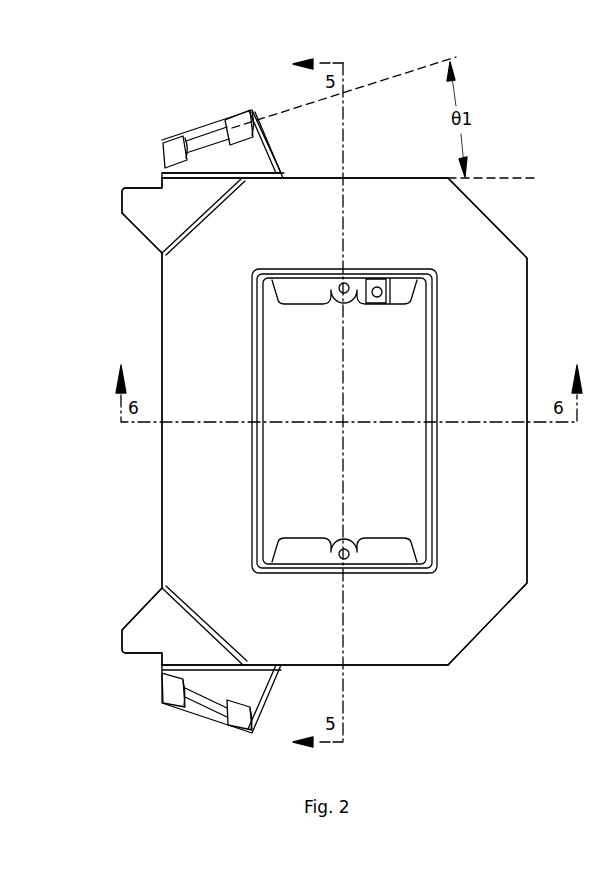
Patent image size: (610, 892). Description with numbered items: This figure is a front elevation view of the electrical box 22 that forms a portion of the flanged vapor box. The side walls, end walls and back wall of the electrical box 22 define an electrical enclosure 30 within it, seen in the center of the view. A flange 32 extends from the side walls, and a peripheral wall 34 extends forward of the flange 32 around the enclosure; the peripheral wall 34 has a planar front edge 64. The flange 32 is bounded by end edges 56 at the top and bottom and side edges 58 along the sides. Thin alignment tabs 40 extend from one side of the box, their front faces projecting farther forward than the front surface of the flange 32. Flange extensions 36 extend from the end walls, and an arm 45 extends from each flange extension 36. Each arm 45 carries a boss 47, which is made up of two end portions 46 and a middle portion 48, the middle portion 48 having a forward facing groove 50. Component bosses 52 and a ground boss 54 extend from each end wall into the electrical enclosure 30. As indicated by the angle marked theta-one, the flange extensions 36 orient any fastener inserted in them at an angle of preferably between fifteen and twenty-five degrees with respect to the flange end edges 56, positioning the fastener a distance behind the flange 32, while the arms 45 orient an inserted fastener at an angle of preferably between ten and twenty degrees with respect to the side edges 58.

The electrical box 22 is at (548, 206).
The electrical enclosure 30 is at (394, 370).
The flange 32 is at (493, 334).
The peripheral wall 34 is at (298, 273).
The flange extension 36 is at (162, 173).
The alignment tab 40 is at (122, 204).
The arm 45 is at (256, 153).
The end portion 46 is at (239, 112).
The boss 47 is at (256, 100).
The middle portion 48 is at (221, 150).
The forward facing groove 50 is at (192, 150).
The component boss 52 is at (350, 566).
The ground boss 54 is at (377, 282).
The end edge 56 is at (394, 178).
The side edge 58 is at (162, 500).
The planar front edge 64 is at (433, 462).